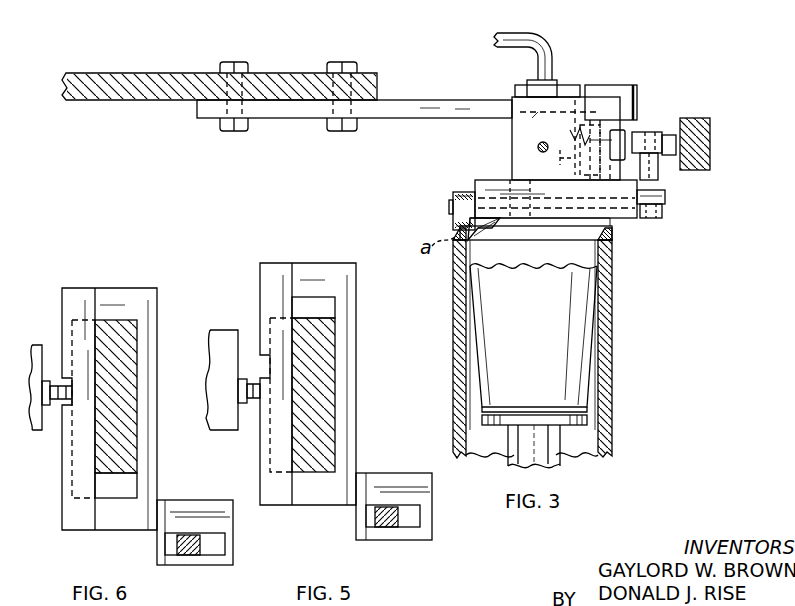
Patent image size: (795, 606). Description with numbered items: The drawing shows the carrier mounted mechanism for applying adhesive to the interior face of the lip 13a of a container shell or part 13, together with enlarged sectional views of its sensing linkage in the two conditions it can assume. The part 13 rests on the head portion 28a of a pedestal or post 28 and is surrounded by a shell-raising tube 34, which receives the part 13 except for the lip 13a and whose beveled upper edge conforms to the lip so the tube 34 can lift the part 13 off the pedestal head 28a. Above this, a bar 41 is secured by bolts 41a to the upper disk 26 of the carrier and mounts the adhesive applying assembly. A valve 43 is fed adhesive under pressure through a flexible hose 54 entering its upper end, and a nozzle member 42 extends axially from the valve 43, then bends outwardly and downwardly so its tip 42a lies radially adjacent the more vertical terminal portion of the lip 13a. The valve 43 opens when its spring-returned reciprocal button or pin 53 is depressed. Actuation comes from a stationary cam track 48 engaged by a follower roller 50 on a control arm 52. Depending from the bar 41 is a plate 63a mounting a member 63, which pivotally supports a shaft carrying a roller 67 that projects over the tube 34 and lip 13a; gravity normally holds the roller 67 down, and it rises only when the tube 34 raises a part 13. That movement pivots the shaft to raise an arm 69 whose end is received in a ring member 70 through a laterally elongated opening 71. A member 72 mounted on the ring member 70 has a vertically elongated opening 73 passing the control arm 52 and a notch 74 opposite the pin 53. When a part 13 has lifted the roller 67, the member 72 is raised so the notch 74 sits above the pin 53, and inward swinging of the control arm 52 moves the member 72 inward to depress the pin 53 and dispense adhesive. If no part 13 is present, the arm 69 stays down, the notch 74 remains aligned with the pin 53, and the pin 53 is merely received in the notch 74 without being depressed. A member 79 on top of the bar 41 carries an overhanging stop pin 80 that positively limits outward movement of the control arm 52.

In FIG. 3, the shell or part 13 is at (580, 366).
In FIG. 3, the lip 13a is at (604, 238).
In FIG. 3, the upper disk 26 is at (372, 78).
In FIG. 3, the pedestal or post 28 is at (556, 460).
In FIG. 3, the head portion 28a is at (590, 424).
In FIG. 3, the shell-raising tube 34 is at (612, 308).
In FIG. 3, the bar 41 is at (408, 100).
In FIG. 3, the bolts 41a is at (345, 62).
In FIG. 3, the nozzle member 42 is at (506, 242).
In FIG. 3, the nozzle tip 42a is at (466, 242).
In FIG. 3, the valve 43 is at (538, 148).
In FIG. 6, the valve 43 is at (36, 345).
In FIG. 5, the valve 43 is at (222, 430).
In FIG. 3, the cam track 48 is at (712, 146).
In FIG. 3, the follower rollers 50 is at (668, 130).
In FIG. 3, the control arm 52 is at (660, 174).
In FIG. 6, the control arm 52 is at (116, 409).
In FIG. 5, the control arm 52 is at (326, 376).
In FIG. 3, the button or pin 53 is at (566, 158).
In FIG. 6, the button or pin 53 is at (48, 407).
In FIG. 5, the button or pin 53 is at (249, 405).
In FIG. 3, the flexible hose 54 is at (556, 46).
In FIG. 3, the member 63 is at (478, 190).
In FIG. 3, the plate 63a is at (512, 135).
In FIG. 3, the roller 67 is at (454, 226).
In FIG. 3, the arm 69 is at (662, 218).
In FIG. 6, the arm 69 is at (212, 546).
In FIG. 5, the arm 69 is at (414, 527).
In FIG. 3, the ring member 70 is at (666, 194).
In FIG. 5, the ring member 70 is at (382, 484).
In FIG. 6, the laterally elongated opening 71 is at (214, 556).
In FIG. 5, the laterally elongated opening 71 is at (405, 532).
In FIG. 3, the member 72 is at (614, 88).
In FIG. 6, the member 72 is at (108, 409).
In FIG. 5, the member 72 is at (350, 398).
In FIG. 5, the vertically elongated opening 73 is at (318, 298).
In FIG. 3, the notch 74 is at (592, 92).
In FIG. 6, the notch 74 is at (106, 444).
In FIG. 5, the notch 74 is at (262, 356).
In FIG. 3, the member 79 is at (568, 85).
In FIG. 3, the stop pin 80 is at (640, 102).